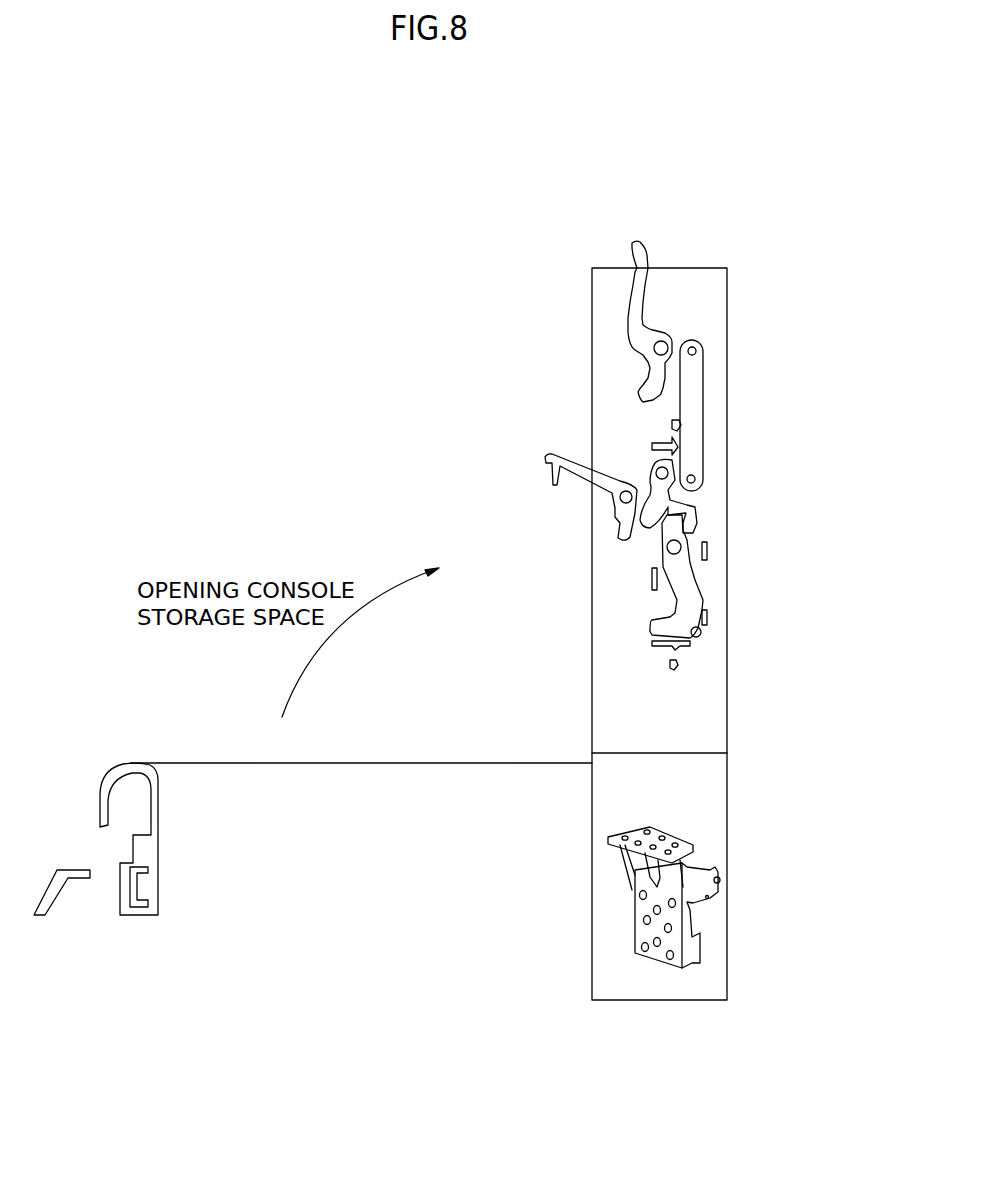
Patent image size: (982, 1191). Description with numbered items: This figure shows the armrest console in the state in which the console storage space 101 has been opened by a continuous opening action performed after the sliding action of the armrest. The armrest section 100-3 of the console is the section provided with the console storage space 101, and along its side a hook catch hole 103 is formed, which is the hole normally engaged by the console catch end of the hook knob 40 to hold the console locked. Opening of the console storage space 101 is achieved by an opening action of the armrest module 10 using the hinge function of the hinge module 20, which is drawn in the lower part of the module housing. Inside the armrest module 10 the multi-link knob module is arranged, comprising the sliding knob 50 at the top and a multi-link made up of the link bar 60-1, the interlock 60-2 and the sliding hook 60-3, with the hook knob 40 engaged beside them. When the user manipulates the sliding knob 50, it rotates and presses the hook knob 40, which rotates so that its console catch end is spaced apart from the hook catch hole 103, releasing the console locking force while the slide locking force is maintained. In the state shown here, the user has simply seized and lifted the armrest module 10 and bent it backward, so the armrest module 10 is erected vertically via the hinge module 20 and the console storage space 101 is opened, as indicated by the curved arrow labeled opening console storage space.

The armrest module 10 is at (728, 602).
The hinge module 20 is at (668, 913).
The hook knob 40 is at (579, 468).
The sliding knob 50 is at (642, 295).
The link bar 60-1 is at (692, 400).
The interlock 60-2 is at (670, 502).
The sliding hook 60-3 is at (682, 558).
The armrest section 100-3 is at (151, 900).
The console storage space 101 is at (318, 851).
The hook catch hole 103 is at (101, 848).